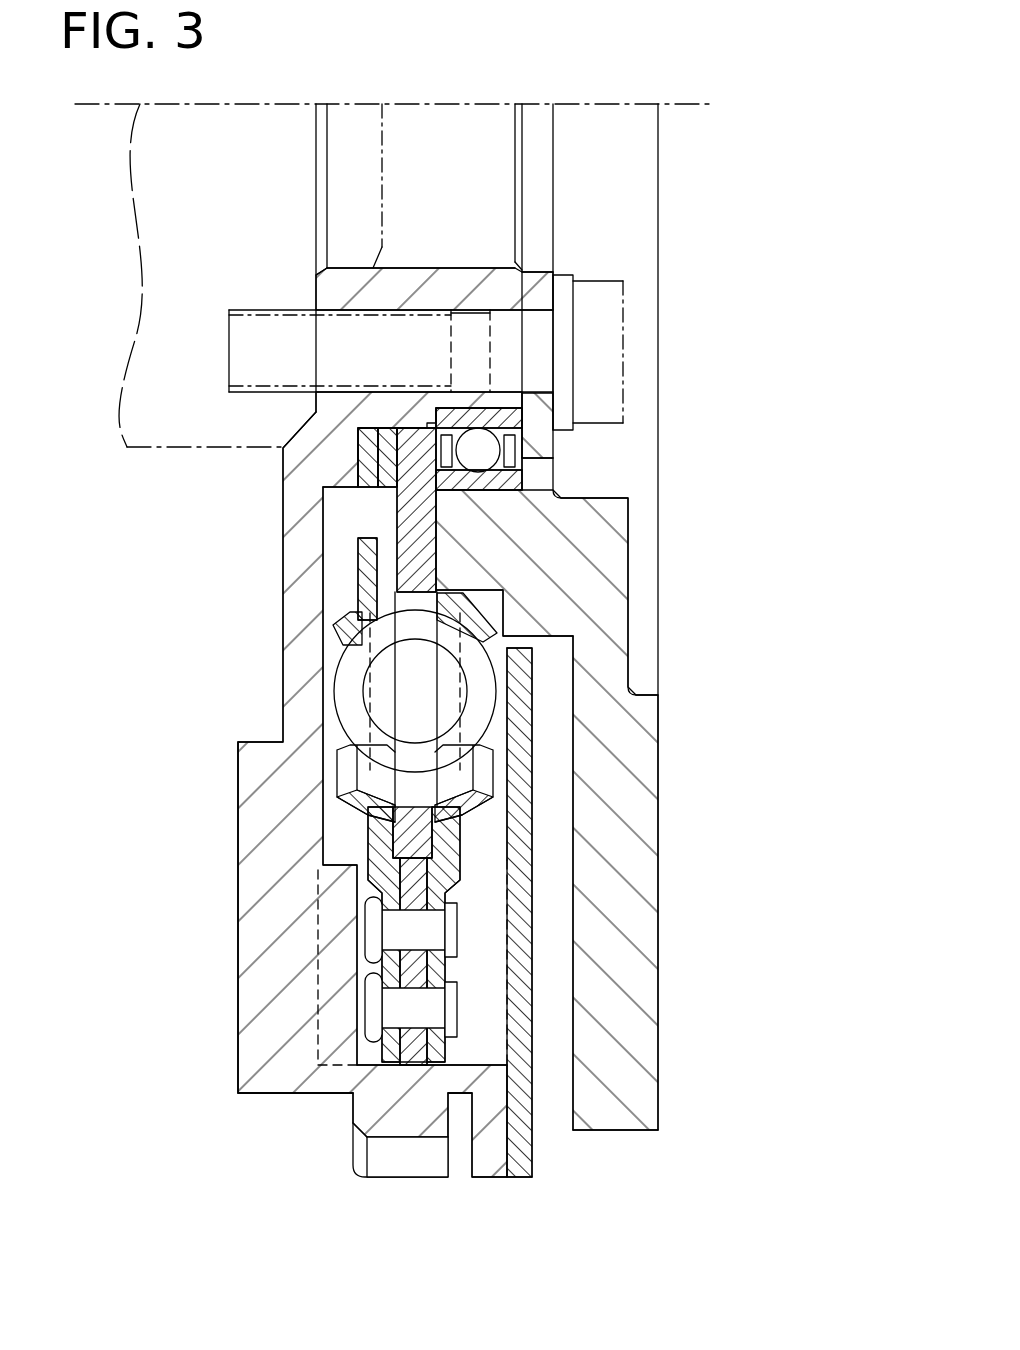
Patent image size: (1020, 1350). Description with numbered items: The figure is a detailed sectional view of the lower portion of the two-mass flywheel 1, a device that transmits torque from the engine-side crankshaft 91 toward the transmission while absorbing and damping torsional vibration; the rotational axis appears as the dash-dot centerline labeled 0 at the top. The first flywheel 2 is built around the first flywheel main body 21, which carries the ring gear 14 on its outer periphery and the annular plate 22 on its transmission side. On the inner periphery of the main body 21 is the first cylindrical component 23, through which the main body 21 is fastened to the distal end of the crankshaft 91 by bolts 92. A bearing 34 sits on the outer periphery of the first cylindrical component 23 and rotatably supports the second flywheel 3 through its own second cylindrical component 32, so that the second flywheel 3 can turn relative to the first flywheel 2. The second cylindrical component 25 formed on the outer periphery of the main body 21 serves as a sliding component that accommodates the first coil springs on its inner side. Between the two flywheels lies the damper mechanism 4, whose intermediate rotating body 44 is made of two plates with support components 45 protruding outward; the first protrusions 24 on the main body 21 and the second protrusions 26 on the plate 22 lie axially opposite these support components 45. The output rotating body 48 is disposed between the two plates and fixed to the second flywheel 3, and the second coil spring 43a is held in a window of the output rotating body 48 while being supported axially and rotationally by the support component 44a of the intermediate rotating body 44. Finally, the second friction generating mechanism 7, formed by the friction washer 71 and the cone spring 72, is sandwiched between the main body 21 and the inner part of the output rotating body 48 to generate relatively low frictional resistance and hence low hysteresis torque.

The rotation axis 0 is at (402, 105).
The two-mass flywheel 1 is at (768, 1202).
The first flywheel 2 is at (232, 1088).
The second flywheel 3 is at (667, 1042).
The damper mechanism 4 is at (497, 737).
The second friction generating mechanism 7 is at (360, 498).
The ring gear 14 is at (412, 1158).
The first flywheel main body 21 is at (277, 1017).
The annular plate 22 is at (525, 1142).
The first cylindrical component 23 is at (492, 292).
The first protrusions 24 is at (345, 969).
The second cylindrical component 25 is at (433, 1087).
The second protrusions 26 is at (490, 977).
The second cylindrical component 32 is at (483, 545).
The bearing 34 is at (525, 443).
The second coil spring 43a is at (345, 682).
The intermediate rotating body 44 is at (367, 852).
The support component 44a is at (363, 810).
The support components 45 is at (375, 1057).
The output rotating body 48 is at (407, 560).
The friction washer 71 is at (383, 477).
The cone spring 72 is at (368, 467).
The crankshaft 91 is at (105, 508).
The bolts 92 is at (603, 355).